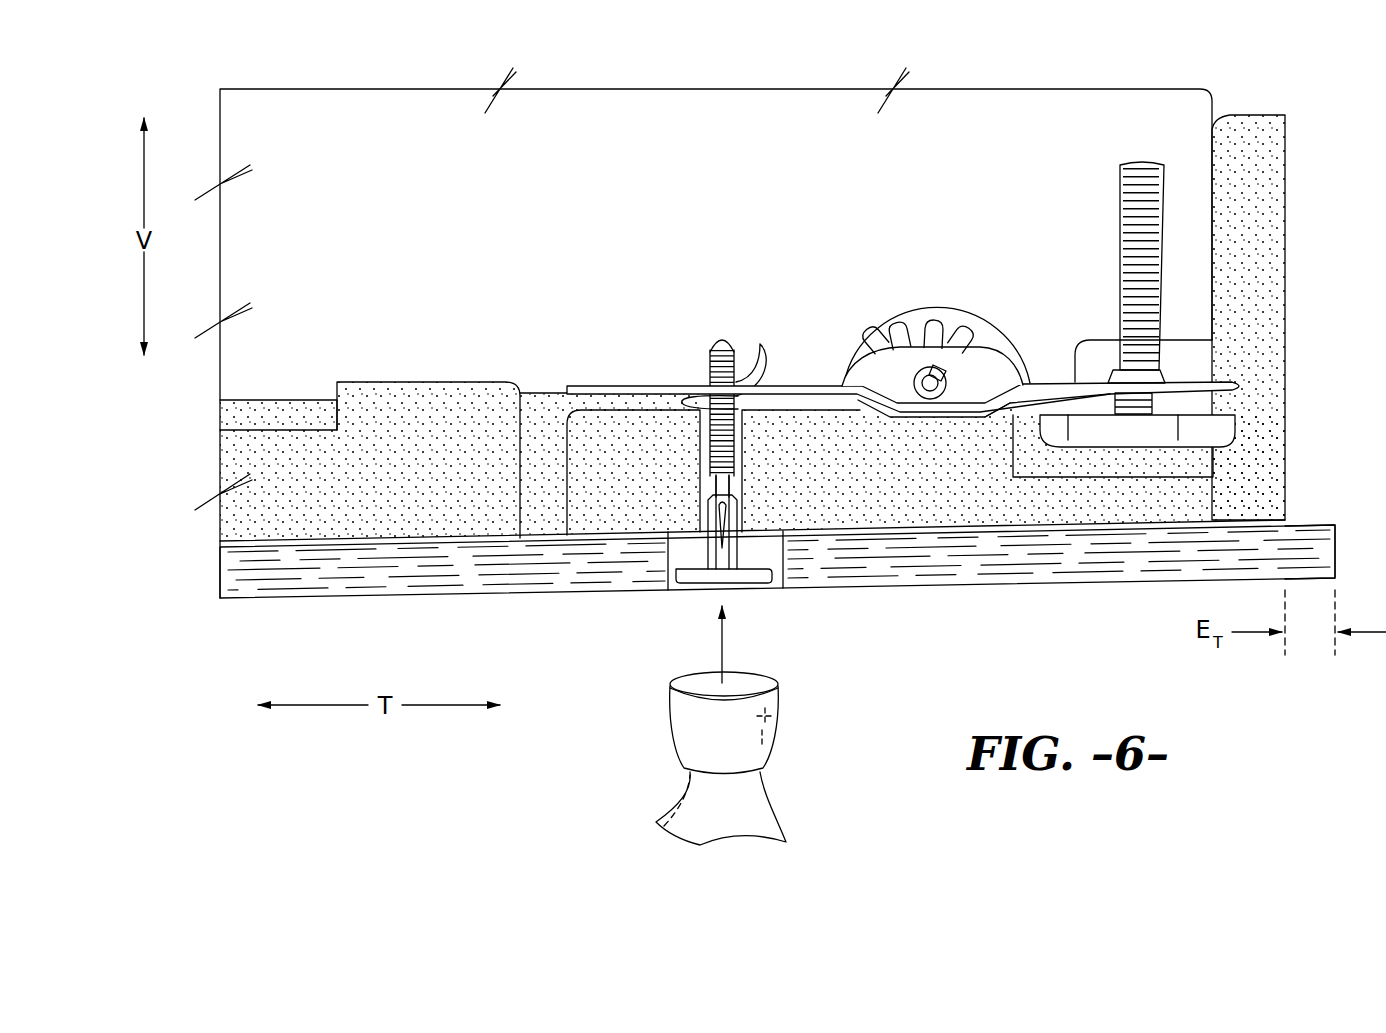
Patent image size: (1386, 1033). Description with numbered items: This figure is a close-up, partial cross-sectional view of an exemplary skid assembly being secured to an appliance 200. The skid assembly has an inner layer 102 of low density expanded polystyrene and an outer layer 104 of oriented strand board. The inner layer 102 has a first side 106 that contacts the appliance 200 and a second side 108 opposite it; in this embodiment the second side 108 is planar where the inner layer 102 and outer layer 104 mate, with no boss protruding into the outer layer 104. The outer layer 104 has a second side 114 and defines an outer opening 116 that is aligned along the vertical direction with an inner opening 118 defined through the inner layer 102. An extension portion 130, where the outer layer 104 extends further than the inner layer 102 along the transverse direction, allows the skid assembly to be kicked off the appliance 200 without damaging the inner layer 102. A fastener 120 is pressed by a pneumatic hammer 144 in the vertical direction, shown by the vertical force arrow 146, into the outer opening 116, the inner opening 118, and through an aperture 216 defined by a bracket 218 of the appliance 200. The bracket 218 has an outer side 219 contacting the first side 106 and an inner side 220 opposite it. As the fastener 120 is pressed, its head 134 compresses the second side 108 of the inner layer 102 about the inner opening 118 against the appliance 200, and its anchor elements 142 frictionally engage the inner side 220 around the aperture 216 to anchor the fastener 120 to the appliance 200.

The appliance 200 is at (463, 230).
The inner layer 102 is at (220, 462).
The outer layer 104 is at (220, 577).
The first side 106 is at (432, 372).
The second side 108 is at (675, 585).
The second side 114 is at (312, 600).
The outer opening 116 is at (768, 572).
The inner opening 118 is at (700, 449).
The fastener 120 is at (720, 340).
The extension portion 130 is at (1305, 520).
The head 134 is at (700, 580).
The anchor element 142 is at (734, 360).
The pneumatic hammer 144 is at (752, 716).
The vertical force arrow 146 is at (722, 643).
The aperture 216 is at (710, 378).
The bracket 218 is at (1038, 380).
The outer side 219 is at (798, 388).
The inner side 220 is at (798, 385).